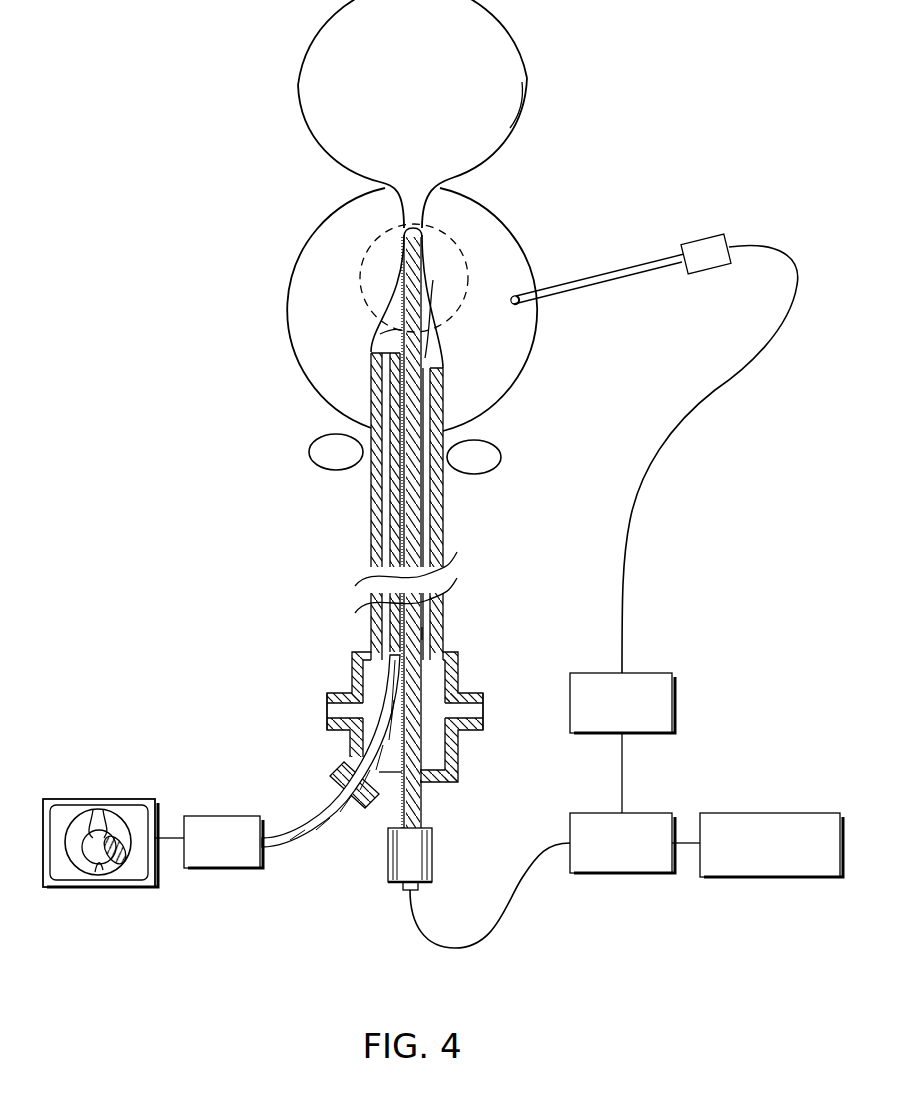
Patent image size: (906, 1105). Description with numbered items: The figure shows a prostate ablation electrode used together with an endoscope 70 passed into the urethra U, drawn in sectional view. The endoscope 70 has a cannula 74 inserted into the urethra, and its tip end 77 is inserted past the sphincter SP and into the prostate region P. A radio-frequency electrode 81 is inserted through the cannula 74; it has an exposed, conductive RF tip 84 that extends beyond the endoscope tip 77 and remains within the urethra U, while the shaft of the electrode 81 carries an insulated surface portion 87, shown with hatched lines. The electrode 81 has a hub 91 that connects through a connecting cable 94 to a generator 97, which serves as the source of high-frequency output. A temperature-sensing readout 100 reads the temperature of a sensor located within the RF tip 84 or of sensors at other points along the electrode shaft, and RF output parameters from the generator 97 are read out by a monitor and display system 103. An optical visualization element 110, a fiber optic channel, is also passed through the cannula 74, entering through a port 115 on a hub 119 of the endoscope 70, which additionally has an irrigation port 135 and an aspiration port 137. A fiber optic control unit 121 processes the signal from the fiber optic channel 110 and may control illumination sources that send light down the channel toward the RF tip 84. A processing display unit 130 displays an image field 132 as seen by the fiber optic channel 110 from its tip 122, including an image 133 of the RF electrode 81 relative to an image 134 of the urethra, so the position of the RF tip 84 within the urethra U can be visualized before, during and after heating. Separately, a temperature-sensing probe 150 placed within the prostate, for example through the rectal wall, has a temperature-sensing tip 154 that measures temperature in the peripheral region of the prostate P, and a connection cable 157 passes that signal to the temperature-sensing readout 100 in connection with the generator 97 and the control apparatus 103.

The endoscope 70 is at (444, 488).
The cannula 74 is at (371, 483).
The tip end 77 is at (425, 358).
The radio-frequency electrode 81 is at (422, 627).
The RF tip 84 is at (424, 267).
The insulated surface portion 87 is at (440, 540).
The optical visualization element 110 is at (385, 527).
The tip of the fiber optic line channel 122 is at (382, 332).
The hub 119 is at (457, 677).
The irrigation port 135 is at (467, 737).
The aspiration port 137 is at (335, 692).
The port 115 is at (330, 763).
The fiber optic control unit 121 is at (212, 816).
The hub 91 is at (430, 853).
The connecting cable 94 is at (512, 915).
The generator 97 is at (622, 876).
The temperature-sensing readout 100 is at (677, 702).
The monitor and display system 103 is at (757, 813).
The temperature-sensing probe 150 is at (632, 258).
The temperature-sensing tip 154 is at (527, 287).
The connection cable 157 is at (650, 467).
The processing display unit 130 is at (115, 800).
The image field 132 is at (70, 817).
The image of the RF electrode 133 is at (100, 878).
The image of the urethra 134 is at (72, 870).
The prostate region P is at (333, 208).
The urethra U is at (425, 210).
The sphincter SP is at (309, 452).